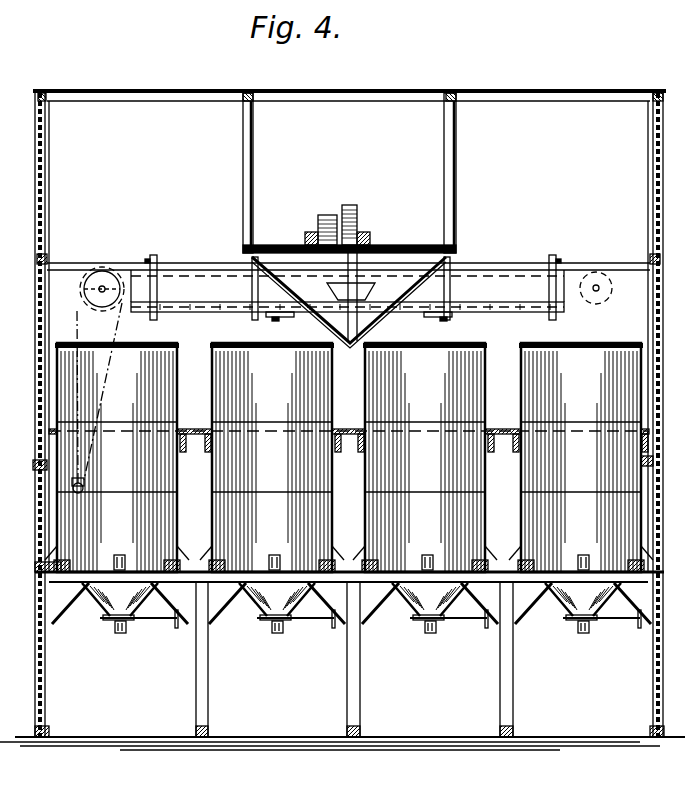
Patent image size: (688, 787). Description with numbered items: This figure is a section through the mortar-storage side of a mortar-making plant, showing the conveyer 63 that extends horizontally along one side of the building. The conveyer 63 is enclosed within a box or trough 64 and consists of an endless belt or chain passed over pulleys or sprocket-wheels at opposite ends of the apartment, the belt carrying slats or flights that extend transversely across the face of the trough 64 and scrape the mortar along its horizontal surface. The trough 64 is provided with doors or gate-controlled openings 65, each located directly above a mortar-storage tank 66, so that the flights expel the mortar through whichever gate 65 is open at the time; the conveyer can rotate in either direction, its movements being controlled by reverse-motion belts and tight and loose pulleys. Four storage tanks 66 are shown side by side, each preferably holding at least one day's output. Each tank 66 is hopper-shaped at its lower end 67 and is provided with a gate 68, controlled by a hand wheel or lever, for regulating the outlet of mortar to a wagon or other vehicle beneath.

The conveyer 63 is at (419, 312).
The box or trough 64 is at (213, 314).
The doors or gate-controlled openings 65 is at (283, 319).
The mortar-storage tank 66 is at (343, 457).
The hopper-shaped lower end 67 is at (96, 616).
The gate 68 is at (133, 632).